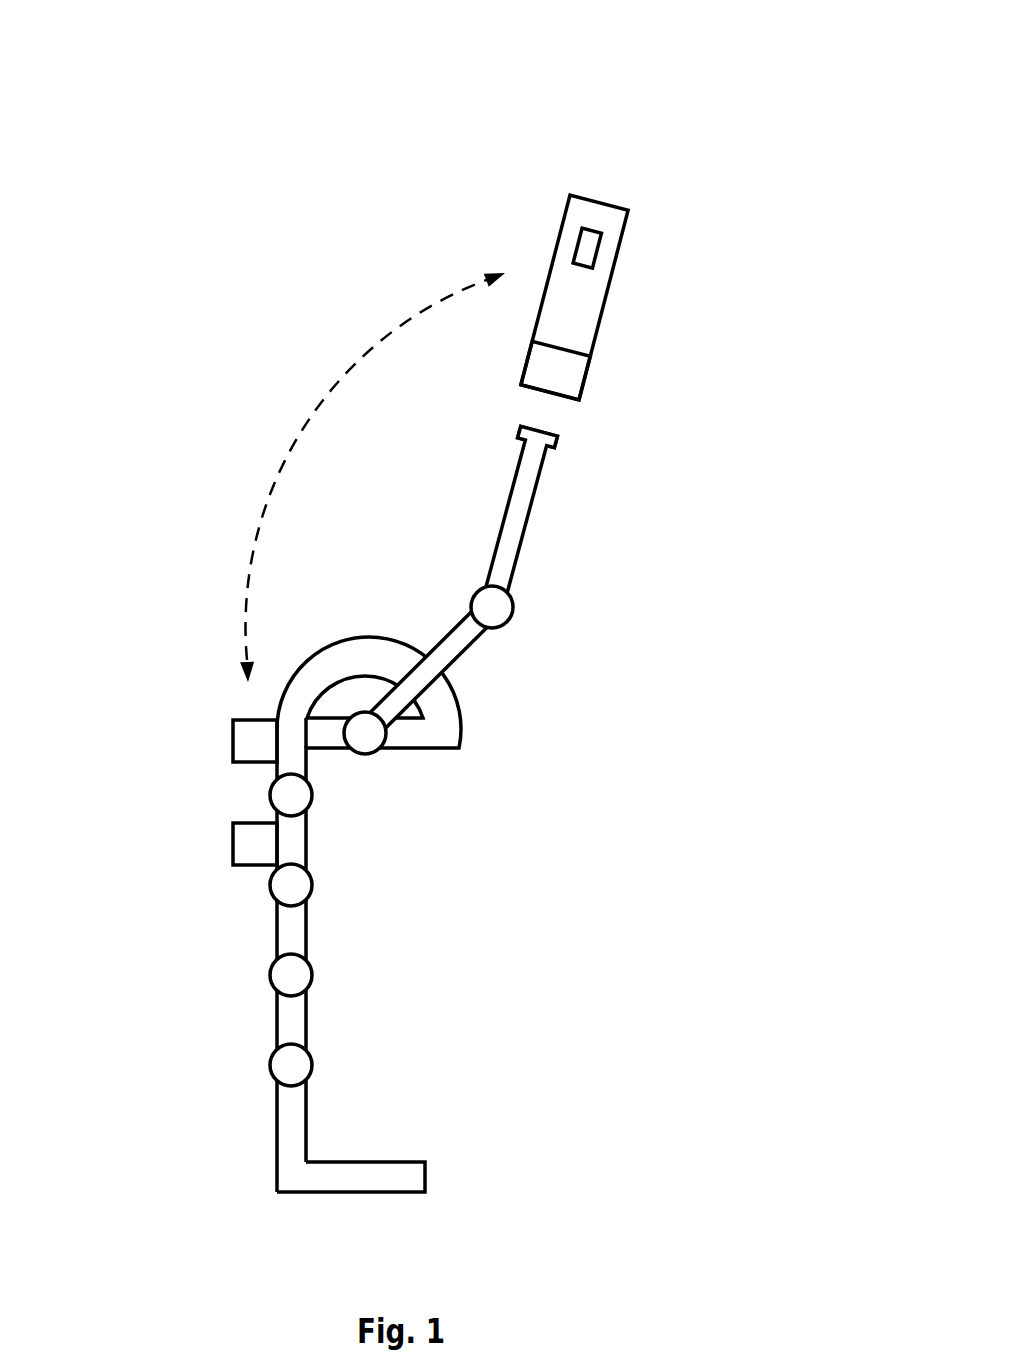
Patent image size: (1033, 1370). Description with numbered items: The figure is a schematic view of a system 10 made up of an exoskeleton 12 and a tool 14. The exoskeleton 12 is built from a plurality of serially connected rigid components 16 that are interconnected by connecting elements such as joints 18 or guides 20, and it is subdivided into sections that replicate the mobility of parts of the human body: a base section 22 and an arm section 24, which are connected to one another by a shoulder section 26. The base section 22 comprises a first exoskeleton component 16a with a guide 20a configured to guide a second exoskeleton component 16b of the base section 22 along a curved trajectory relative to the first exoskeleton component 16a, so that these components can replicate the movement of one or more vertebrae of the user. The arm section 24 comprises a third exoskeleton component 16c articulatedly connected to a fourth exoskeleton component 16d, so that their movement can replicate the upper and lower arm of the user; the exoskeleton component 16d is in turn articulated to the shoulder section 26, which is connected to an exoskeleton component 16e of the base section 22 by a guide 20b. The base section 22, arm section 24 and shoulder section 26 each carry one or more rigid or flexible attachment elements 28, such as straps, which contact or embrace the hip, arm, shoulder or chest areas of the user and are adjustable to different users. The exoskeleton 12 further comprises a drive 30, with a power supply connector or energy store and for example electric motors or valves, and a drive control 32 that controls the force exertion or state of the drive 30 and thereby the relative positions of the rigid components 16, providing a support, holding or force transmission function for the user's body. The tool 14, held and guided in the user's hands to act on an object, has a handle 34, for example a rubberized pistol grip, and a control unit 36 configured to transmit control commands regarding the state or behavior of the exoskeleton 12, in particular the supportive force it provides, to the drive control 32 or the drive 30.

The system 10 is at (728, 28).
The exoskeleton 12 is at (145, 560).
The tool 14 is at (502, 147).
The rigid components 16 is at (277, 775).
The first exoskeleton component 16a is at (277, 1117).
The second exoskeleton component 16b is at (277, 1022).
The third exoskeleton component 16c is at (508, 473).
The fourth exoskeleton component 16d is at (468, 660).
The exoskeleton component 16e is at (307, 845).
The joints 18 is at (475, 587).
The guides 20 is at (272, 902).
The guide 20a is at (277, 1080).
The guide 20b is at (308, 807).
The base section 22 is at (478, 1062).
The arm section 24 is at (641, 736).
The shoulder section 26 is at (553, 883).
The attachment elements 28 is at (552, 446).
The drive 30 is at (233, 848).
The drive control 32 is at (233, 755).
The handle 34 is at (580, 402).
The control unit 36 is at (603, 233).